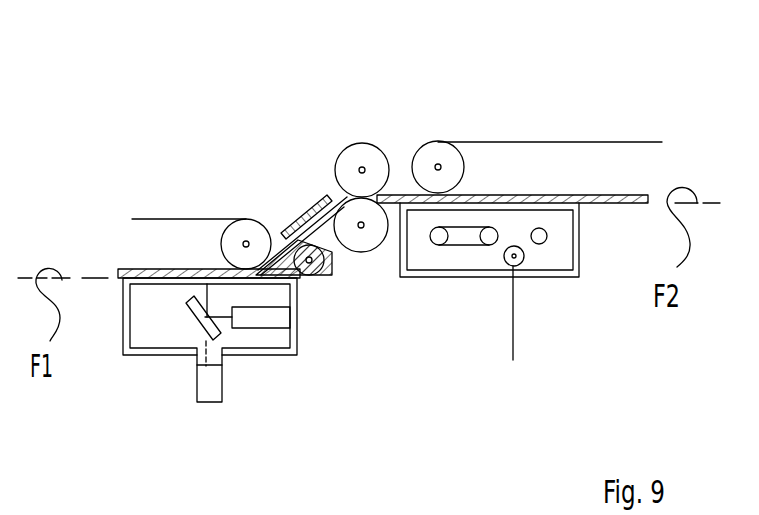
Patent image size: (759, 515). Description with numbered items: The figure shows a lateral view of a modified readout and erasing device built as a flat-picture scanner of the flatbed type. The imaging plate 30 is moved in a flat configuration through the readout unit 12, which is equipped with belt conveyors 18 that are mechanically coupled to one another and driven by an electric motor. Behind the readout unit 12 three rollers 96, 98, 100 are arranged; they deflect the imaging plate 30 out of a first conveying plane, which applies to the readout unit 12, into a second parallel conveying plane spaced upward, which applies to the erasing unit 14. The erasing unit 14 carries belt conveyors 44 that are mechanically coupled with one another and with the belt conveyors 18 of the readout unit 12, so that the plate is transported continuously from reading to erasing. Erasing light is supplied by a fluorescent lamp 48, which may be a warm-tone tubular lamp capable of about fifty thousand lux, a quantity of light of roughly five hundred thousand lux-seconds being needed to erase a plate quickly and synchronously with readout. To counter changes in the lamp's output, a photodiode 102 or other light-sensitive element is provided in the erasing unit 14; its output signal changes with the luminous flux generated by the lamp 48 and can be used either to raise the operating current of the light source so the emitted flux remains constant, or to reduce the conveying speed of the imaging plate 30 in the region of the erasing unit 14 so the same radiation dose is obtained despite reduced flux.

The readout unit 12 is at (124, 376).
The erasing unit 14 is at (436, 286).
The belt conveyors 18 is at (185, 207).
The imaging plate 30 is at (143, 270).
The belt conveyors 44 is at (571, 128).
The fluorescent lamp 48 is at (467, 236).
The roller 96 is at (322, 278).
The roller 98 is at (355, 238).
The roller 100 is at (356, 155).
The photodiode 102 is at (523, 262).